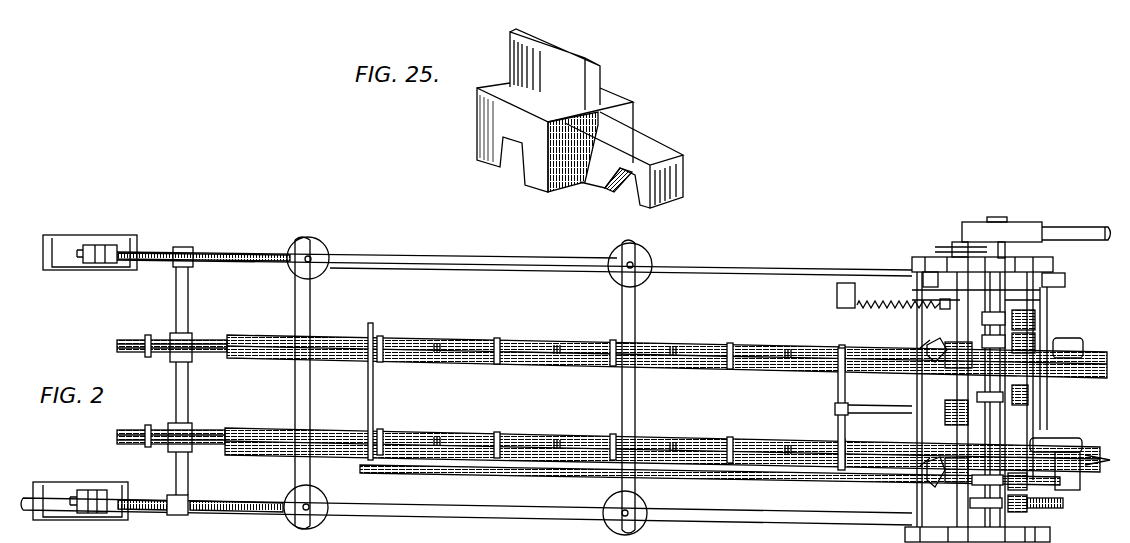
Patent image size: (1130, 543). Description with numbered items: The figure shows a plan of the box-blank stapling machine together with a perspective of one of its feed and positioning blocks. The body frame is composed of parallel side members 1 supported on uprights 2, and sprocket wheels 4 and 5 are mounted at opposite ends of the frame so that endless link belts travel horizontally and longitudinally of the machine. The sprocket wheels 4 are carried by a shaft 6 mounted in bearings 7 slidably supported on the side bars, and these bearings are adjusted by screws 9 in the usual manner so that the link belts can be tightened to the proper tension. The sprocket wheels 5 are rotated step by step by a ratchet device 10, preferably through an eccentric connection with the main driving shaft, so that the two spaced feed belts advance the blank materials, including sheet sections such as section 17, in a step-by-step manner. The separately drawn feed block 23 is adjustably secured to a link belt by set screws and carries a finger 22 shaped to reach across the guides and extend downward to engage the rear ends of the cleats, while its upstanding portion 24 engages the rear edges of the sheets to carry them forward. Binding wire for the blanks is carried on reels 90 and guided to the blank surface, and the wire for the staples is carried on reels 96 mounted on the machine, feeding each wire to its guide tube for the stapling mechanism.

In FIG. 2, the side member 1 is at (474, 510).
In FIG. 2, the upright 2 is at (643, 503).
In FIG. 2, the sprocket wheel 4 is at (206, 446).
In FIG. 2, the sprocket wheel 5 is at (209, 355).
In FIG. 2, the shaft 6 is at (175, 516).
In FIG. 2, the bearing 7 is at (190, 497).
In FIG. 2, the screw 9 is at (258, 506).
In FIG. 2, the ratchet device 10 is at (1062, 507).
In FIG. 2, the section 17 is at (298, 390).
In FIG. 25, the finger 22 is at (673, 147).
In FIG. 25, the feed block 23 is at (483, 125).
In FIG. 25, the upstanding portion 24 is at (588, 60).
In FIG. 2, the reel 90 is at (912, 423).
In FIG. 2, the reel 96 is at (1047, 409).